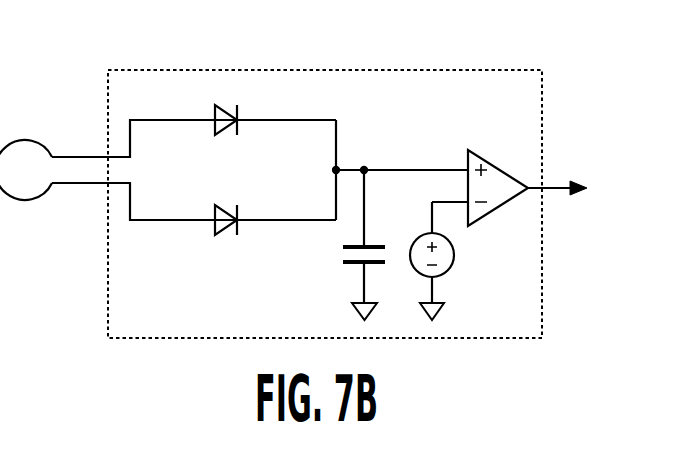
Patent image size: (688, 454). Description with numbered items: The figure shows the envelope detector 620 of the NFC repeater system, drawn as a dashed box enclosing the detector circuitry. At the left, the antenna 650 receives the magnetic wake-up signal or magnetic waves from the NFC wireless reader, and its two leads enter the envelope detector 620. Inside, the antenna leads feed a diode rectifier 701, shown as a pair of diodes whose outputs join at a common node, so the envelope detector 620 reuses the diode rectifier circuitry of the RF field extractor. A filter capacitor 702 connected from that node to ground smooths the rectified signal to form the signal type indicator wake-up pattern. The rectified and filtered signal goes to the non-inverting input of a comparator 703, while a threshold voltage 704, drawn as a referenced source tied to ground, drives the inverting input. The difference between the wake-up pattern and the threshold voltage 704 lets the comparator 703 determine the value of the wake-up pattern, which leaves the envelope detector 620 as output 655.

The envelope detector 620 is at (357, 70).
The antenna 650 is at (26, 140).
The output signal 655 is at (557, 185).
The diode rectifier 701 is at (215, 112).
The filter capacitor 702 is at (343, 255).
The comparator 703 is at (503, 166).
The threshold voltage 704 is at (454, 260).